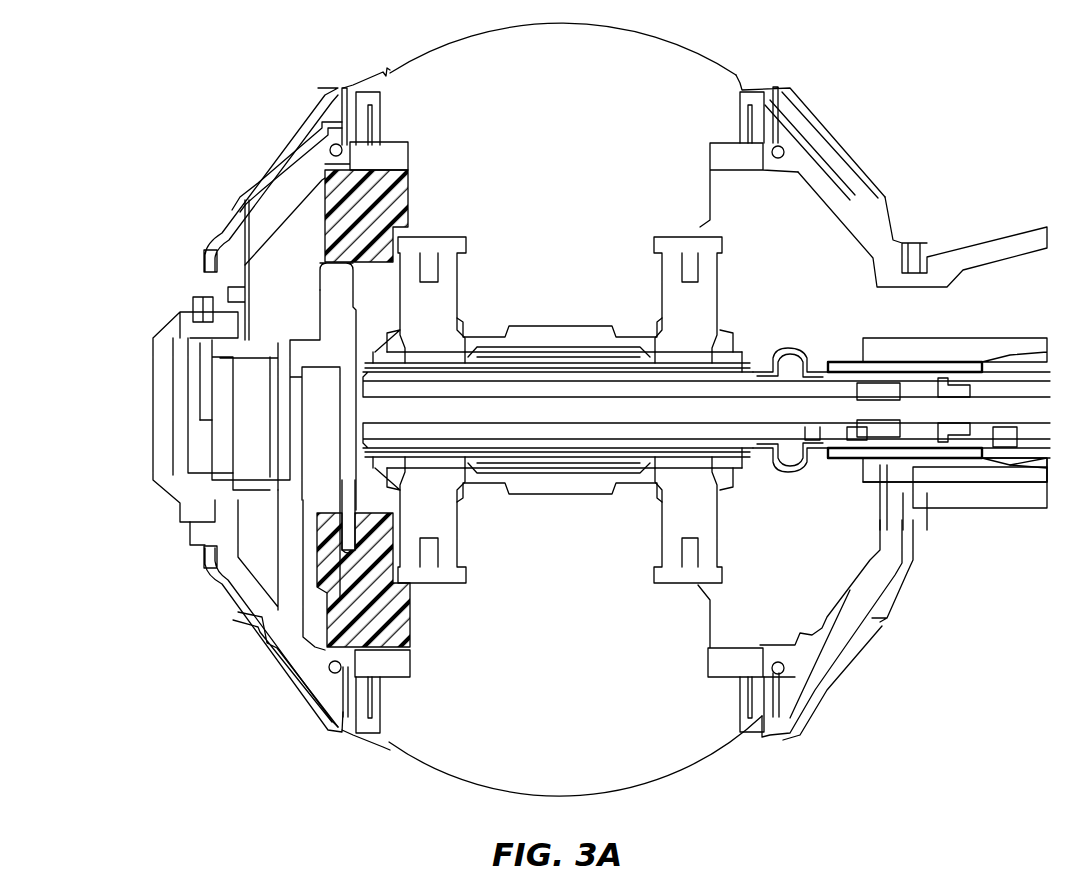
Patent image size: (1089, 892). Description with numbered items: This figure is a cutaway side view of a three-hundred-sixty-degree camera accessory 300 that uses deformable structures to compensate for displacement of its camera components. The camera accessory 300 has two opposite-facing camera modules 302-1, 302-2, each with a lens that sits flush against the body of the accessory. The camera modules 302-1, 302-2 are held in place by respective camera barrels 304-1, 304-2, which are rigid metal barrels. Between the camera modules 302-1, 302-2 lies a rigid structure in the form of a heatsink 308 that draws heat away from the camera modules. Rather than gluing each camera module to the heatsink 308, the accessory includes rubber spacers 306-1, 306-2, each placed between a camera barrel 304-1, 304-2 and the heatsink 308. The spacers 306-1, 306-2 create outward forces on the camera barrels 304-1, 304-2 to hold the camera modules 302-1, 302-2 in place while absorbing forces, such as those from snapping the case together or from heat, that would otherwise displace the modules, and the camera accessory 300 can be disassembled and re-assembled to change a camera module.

The camera accessory 300 is at (908, 80).
The camera module 302-1 is at (577, 120).
The camera module 302-2 is at (577, 668).
The camera barrel 304-1 is at (328, 151).
The camera barrel 304-2 is at (328, 660).
The spacer 306-1 is at (341, 231).
The spacer 306-2 is at (318, 573).
The heatsink 308 is at (303, 360).